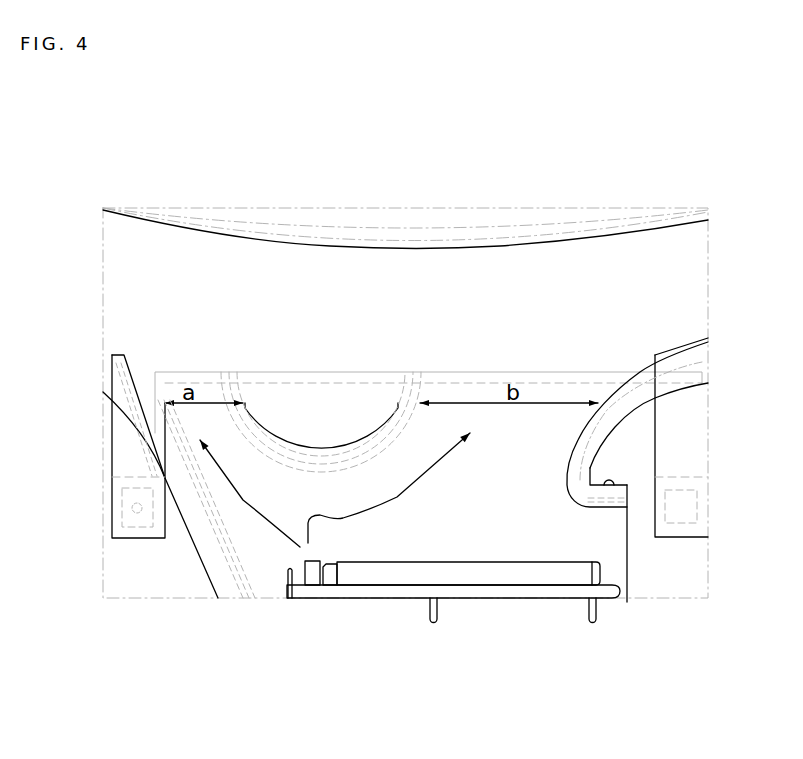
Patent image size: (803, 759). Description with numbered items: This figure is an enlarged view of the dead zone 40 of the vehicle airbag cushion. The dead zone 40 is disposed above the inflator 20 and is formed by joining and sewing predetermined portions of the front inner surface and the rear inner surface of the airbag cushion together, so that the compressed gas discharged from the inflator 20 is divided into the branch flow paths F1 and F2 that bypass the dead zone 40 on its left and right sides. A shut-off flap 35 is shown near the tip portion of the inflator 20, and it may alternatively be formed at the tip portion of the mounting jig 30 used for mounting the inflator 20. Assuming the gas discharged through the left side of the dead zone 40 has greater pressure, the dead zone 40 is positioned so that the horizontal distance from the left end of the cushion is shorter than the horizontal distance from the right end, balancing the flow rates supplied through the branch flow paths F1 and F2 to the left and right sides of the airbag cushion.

The inflator 20 is at (513, 577).
The mounting jig 30 is at (457, 600).
The shut-off flap 35 is at (292, 586).
The dead zone 40 is at (308, 417).
The branch flow path F1 is at (243, 505).
The branch flow path F2 is at (397, 497).